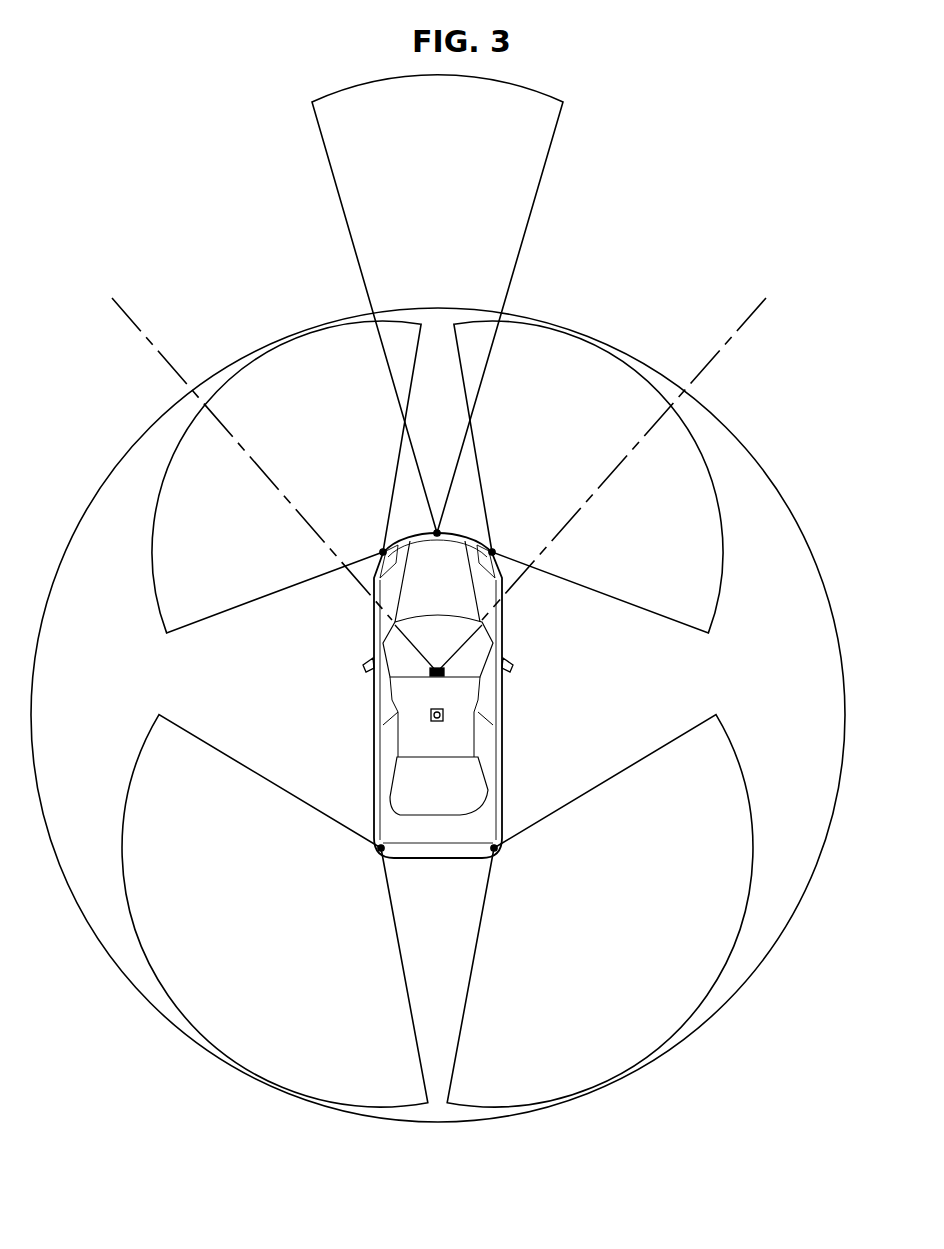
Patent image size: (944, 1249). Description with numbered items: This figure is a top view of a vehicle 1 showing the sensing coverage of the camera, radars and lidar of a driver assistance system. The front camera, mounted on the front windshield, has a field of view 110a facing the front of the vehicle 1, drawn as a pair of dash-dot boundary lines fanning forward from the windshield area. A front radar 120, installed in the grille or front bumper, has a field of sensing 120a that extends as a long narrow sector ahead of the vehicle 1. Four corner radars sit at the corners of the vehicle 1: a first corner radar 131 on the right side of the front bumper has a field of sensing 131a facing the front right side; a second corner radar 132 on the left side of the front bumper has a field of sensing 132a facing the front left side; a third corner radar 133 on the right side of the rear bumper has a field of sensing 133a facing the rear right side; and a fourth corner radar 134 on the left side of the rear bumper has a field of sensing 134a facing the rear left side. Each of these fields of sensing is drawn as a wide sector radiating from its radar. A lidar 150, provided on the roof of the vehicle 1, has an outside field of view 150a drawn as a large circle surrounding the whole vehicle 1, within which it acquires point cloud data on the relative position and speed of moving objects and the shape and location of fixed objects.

The vehicle 1 is at (512, 699).
The field of view 110a is at (731, 347).
The front radar 120 is at (437, 533).
The field of sensing 120a is at (514, 197).
The first corner radar 131 is at (492, 552).
The field of sensing 131a is at (613, 366).
The second corner radar 132 is at (383, 552).
The field of sensing 132a is at (263, 366).
The third corner radar 133 is at (494, 848).
The field of sensing 133a is at (641, 1055).
The fourth corner radar 134 is at (381, 848).
The field of sensing 134a is at (252, 1058).
The lidar 150 is at (430, 715).
The outside field of view 150a is at (816, 607).